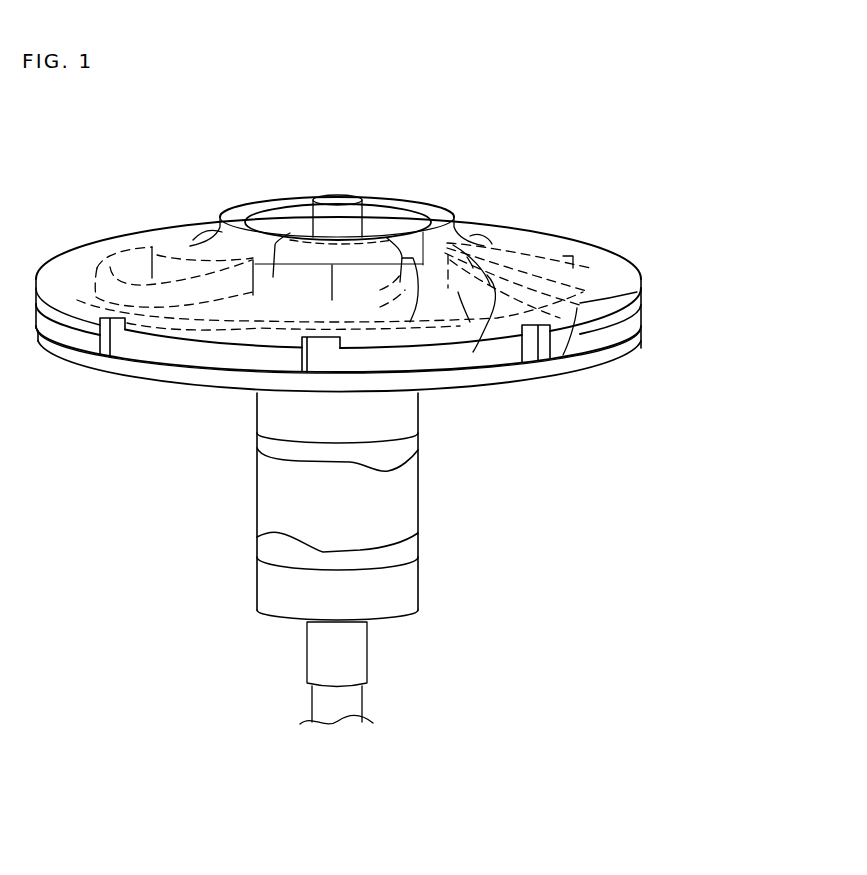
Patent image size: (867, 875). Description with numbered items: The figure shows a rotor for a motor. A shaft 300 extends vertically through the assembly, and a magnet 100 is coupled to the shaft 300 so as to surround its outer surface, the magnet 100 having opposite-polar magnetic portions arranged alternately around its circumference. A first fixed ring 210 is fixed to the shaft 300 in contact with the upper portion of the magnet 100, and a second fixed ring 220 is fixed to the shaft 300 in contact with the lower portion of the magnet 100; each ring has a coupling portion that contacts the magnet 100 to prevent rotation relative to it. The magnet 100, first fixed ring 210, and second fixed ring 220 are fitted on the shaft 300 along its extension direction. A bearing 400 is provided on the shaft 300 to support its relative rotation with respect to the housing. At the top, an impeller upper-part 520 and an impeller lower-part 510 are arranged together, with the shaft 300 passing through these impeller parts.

The magnet 100 is at (408, 500).
The first fixed ring 210 is at (258, 442).
The second fixed ring 220 is at (260, 545).
The shaft 300 is at (342, 204).
The bearing 400 is at (410, 415).
The impeller lower-part 510 is at (641, 337).
The impeller upper-part 520 is at (641, 266).